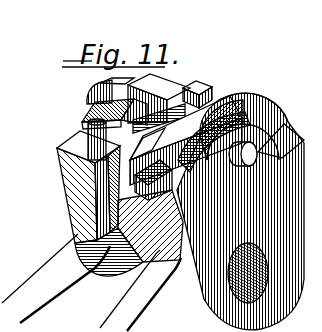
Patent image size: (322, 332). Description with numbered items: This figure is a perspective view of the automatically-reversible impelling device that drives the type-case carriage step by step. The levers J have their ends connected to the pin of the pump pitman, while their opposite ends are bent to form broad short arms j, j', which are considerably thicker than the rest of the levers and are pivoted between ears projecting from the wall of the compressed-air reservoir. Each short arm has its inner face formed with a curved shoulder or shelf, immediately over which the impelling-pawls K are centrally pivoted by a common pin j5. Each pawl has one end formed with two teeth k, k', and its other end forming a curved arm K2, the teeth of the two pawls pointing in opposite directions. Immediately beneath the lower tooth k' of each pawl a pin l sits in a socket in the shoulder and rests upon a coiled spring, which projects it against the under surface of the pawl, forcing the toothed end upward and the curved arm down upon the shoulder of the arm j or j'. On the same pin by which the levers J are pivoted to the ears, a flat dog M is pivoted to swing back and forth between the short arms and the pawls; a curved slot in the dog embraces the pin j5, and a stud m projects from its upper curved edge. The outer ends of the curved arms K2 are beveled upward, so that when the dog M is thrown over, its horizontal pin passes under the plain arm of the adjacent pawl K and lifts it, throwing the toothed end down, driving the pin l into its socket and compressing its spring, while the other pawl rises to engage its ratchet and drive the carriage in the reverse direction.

The short arm j' is at (91, 282).
The short arm j is at (100, 203).
The lever J is at (86, 202).
The pin l is at (87, 130).
The tooth k is at (185, 102).
The lower tooth k' is at (186, 116).
The stud m is at (198, 124).
The impelling-pawl K is at (190, 140).
The curved arm K2 is at (147, 144).
The flat dog M is at (146, 211).
The pin j5 is at (256, 152).